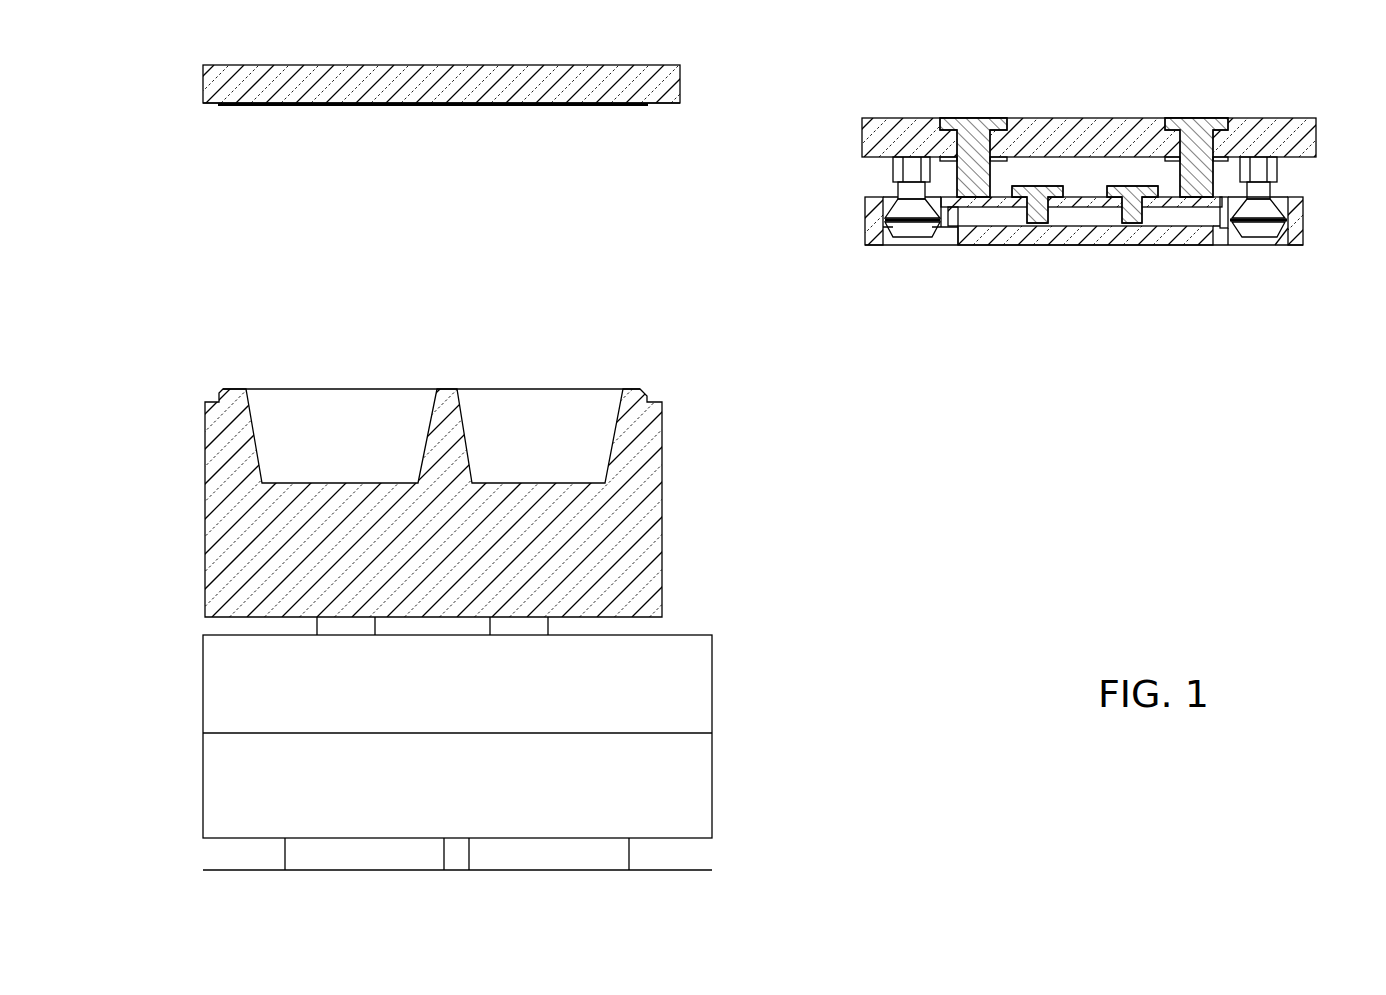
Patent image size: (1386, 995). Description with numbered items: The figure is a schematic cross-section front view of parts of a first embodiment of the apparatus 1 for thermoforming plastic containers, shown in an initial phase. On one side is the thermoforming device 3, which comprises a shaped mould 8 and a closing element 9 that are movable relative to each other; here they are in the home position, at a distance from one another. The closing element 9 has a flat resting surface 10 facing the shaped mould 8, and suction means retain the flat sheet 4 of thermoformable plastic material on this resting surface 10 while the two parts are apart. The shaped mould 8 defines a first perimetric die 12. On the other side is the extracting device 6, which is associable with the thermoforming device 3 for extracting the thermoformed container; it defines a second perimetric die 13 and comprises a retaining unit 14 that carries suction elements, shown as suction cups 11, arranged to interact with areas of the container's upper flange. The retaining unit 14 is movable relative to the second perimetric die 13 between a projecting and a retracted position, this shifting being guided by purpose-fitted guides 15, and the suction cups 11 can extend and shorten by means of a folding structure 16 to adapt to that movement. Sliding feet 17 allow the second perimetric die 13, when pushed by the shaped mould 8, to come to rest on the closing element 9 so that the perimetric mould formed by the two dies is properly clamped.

The apparatus for thermoforming plastic containers 1 is at (1075, 510).
The thermoforming device 3 is at (691, 126).
The flat sheet 4 is at (543, 104).
The extracting device 6 is at (861, 91).
The shaped mould 8 is at (622, 527).
The closing element 9 is at (492, 90).
The resting surface 10 is at (203, 115).
The suction cups 11 is at (912, 240).
The first perimetric die 12 is at (666, 387).
The second perimetric die 13 is at (866, 253).
The retaining unit 14 is at (1102, 267).
The guides 15 is at (1138, 188).
The folding structure 16 is at (1253, 212).
The sliding feet 17 is at (968, 140).